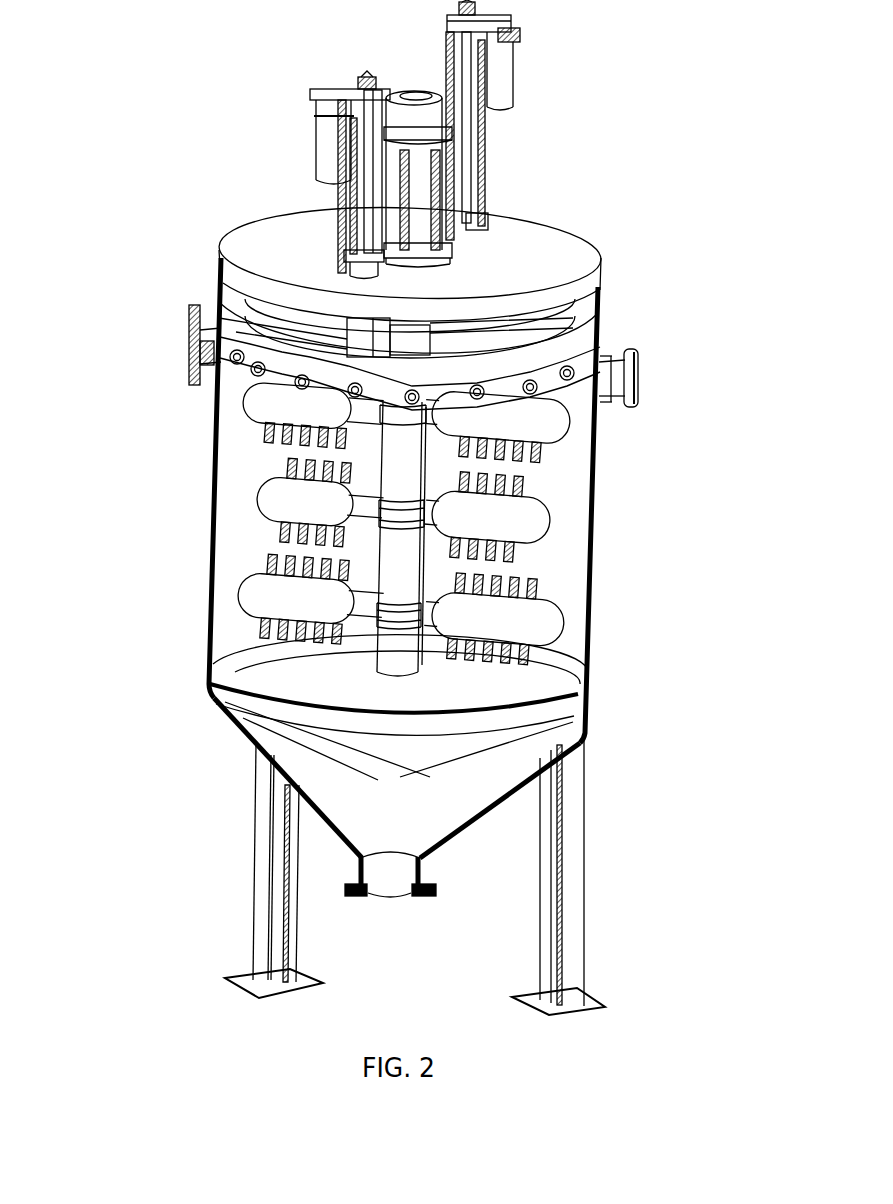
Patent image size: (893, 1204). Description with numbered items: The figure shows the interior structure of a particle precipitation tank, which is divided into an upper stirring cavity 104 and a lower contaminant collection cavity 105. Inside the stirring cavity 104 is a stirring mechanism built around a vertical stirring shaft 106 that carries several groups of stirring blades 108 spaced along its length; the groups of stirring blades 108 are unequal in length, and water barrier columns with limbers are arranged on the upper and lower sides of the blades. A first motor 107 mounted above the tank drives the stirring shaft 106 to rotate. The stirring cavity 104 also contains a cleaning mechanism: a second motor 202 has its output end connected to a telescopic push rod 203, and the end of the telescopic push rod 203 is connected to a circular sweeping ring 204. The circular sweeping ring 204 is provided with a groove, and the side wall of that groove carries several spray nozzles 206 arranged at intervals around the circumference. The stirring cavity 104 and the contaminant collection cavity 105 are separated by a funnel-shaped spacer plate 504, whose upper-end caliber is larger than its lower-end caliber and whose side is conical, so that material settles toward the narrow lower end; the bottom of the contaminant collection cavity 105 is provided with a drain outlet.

The stirring cavity 104 is at (563, 498).
The contaminant collection cavity 105 is at (437, 803).
The stirring shaft 106 is at (400, 470).
The first motor 107 is at (403, 208).
The stirring blades 108 is at (295, 505).
The second motor 202 is at (330, 155).
The telescopic push rod 203 is at (357, 337).
The circular sweeping ring 204 is at (205, 320).
The spray nozzles 206 is at (577, 358).
The funnel-shaped spacer plate 504 is at (350, 731).